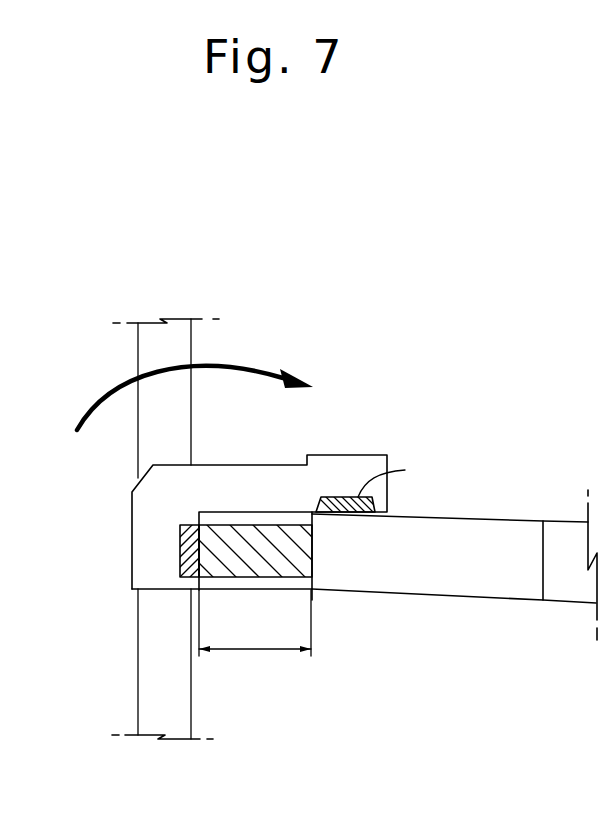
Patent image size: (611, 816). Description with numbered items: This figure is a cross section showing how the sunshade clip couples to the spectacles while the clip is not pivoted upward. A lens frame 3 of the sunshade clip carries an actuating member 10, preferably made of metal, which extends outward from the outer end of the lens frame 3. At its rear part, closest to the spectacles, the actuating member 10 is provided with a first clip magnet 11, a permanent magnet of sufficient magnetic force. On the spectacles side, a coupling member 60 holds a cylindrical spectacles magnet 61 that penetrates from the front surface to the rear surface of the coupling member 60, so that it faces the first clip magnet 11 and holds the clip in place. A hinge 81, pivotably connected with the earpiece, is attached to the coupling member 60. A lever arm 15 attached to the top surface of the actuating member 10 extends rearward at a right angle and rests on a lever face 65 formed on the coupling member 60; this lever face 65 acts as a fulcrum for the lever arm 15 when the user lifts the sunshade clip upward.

The lens frame 3 is at (147, 345).
The actuating member 10 is at (138, 533).
The first clip magnet 11 is at (180, 553).
The lever arm 15 is at (293, 470).
The coupling member 60 is at (267, 632).
The spectacles magnet 61 is at (303, 556).
The lever face 65 is at (255, 504).
The hinge 81 is at (477, 580).